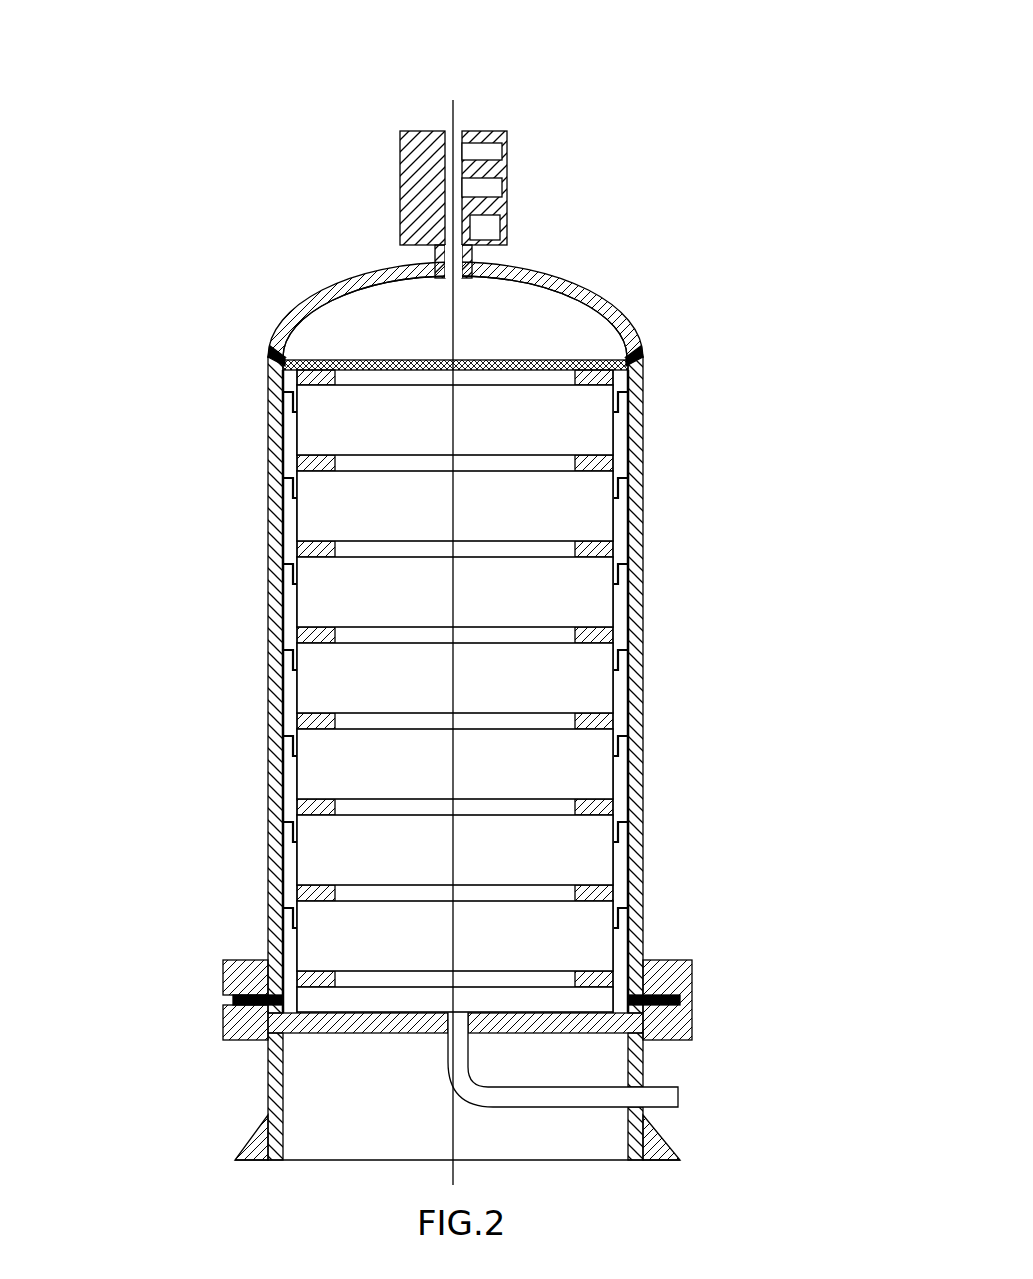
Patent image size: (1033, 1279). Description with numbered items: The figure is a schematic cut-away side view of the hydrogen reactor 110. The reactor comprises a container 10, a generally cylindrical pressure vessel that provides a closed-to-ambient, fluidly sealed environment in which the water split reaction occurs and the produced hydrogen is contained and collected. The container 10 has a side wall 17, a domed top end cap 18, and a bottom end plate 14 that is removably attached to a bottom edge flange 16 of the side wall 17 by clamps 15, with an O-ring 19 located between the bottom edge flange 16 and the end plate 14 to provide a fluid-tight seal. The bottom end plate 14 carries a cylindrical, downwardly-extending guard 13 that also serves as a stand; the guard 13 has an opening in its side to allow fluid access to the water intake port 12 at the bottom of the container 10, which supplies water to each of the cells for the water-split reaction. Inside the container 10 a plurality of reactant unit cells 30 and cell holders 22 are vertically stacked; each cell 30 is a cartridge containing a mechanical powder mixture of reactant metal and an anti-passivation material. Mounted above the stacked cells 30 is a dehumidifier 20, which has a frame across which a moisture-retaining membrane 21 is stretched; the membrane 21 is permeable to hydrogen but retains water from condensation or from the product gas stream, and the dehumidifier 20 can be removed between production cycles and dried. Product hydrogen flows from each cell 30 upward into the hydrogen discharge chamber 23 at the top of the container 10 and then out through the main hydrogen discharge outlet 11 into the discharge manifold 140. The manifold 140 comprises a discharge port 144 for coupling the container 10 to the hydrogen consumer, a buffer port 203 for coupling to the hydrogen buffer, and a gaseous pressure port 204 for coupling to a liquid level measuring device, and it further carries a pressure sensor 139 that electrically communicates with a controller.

The container 10 is at (270, 810).
The main hydrogen discharge outlet 11 is at (462, 262).
The water intake port 12 is at (480, 1043).
The guard 13 is at (278, 1083).
The bottom end plate 14 is at (258, 1020).
The clamps 15 is at (252, 992).
The bottom edge flange 16 is at (260, 958).
The side wall 17 is at (282, 490).
The domed top end cap 18 is at (278, 350).
The O-ring 19 is at (680, 985).
The dehumidifier 20 is at (283, 366).
The moisture-retaining membrane 21 is at (478, 368).
The cell holders 22 is at (640, 722).
The hydrogen discharge chamber 23 is at (480, 308).
The reactant unit cells 30 is at (490, 945).
The hydrogen reactor 110 is at (182, 552).
The pressure sensor 139 is at (500, 228).
The discharge manifold 140 is at (420, 208).
The discharge port 144 is at (463, 130).
The buffer port 203 is at (490, 150).
The gaseous pressure port 204 is at (490, 187).